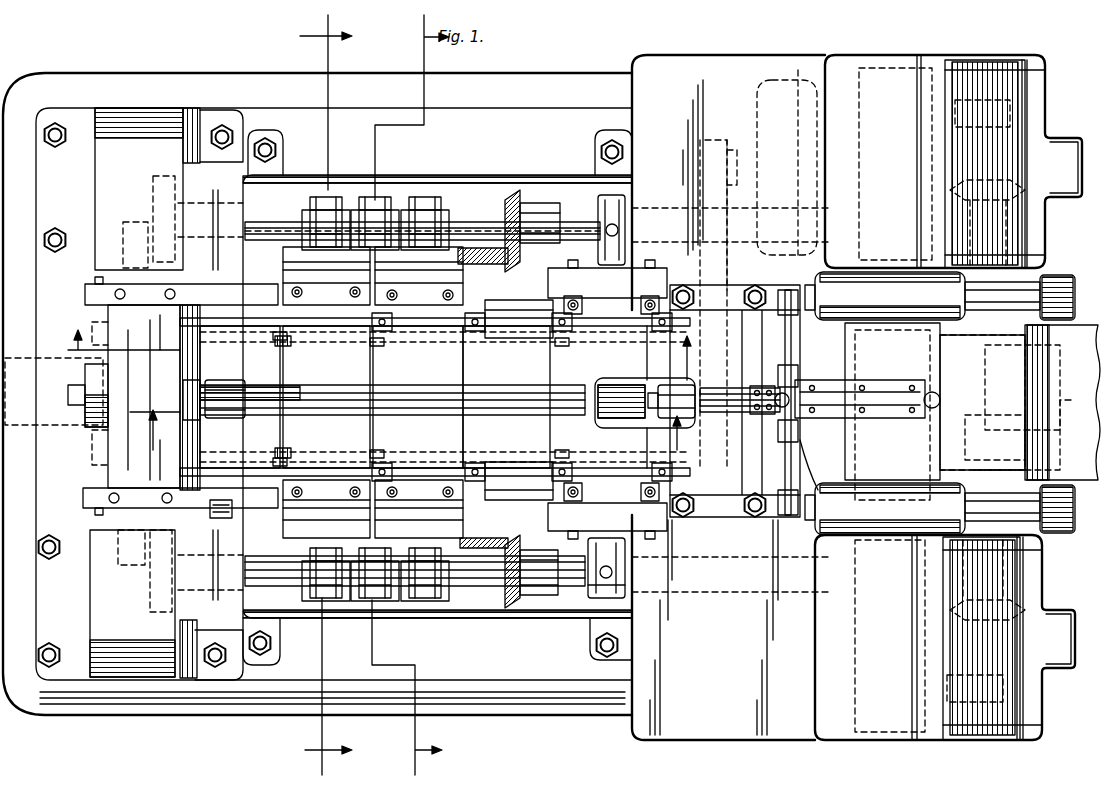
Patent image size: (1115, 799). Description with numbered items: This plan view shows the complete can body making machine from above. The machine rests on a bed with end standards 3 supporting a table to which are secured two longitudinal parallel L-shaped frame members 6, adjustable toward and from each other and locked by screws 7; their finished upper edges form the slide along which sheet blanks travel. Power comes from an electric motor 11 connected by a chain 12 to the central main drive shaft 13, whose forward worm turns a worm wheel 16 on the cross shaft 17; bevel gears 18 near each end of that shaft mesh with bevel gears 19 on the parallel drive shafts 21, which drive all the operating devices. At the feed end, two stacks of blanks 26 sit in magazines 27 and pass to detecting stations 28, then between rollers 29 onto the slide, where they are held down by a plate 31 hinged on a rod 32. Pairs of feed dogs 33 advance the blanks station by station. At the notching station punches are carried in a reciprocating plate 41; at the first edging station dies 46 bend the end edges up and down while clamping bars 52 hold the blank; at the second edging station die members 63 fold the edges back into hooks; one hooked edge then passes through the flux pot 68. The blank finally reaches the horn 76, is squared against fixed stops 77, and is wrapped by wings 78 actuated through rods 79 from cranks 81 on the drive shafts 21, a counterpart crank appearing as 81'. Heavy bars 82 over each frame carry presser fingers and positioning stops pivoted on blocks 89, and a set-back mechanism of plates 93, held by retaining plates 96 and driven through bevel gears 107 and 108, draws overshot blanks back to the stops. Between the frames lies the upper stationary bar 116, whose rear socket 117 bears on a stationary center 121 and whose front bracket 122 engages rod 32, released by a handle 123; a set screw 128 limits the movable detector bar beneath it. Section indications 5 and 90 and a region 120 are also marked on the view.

The end standard 3 is at (410, 395).
The section line 5- 5 is at (322, 395).
The L-shaped frame member 6 is at (492, 176).
The screw 7 is at (376, 355).
The electric motor 11 is at (165, 462).
The chain 12 is at (722, 270).
The main drive shaft 13 is at (858, 512).
The worm wheel 16 is at (1060, 460).
The cross shaft 17 is at (1010, 352).
The bevel gear 18 is at (1018, 195).
The bevel gear 19 is at (960, 237).
The drive shaft 21 is at (660, 208).
The stack of blanks 26 is at (1048, 652).
The magazine 27 is at (1066, 150).
The detecting station 28 is at (876, 68).
The roller 29 is at (940, 403).
The plate 31 is at (892, 411).
The rod 32 is at (792, 356).
The feed dog 33 is at (183, 475).
The reciprocating plate 41 is at (607, 399).
The die 46 is at (415, 280).
The clamping bar 52 is at (300, 338).
The die member 63 is at (335, 280).
The flux pot 68 is at (235, 508).
The horn 76 is at (98, 388).
The fixed stop 77 is at (85, 301).
The wing 78 is at (92, 334).
The rod 79 is at (118, 548).
The crank 81 is at (139, 189).
The bracket block 81' is at (132, 603).
The bar 82 is at (490, 338).
The block 89 is at (478, 313).
The screw 90 is at (285, 340).
The plate 93 is at (625, 230).
The retaining plate 96 is at (468, 375).
The bevel gear 107 is at (480, 248).
The bevel gear 108 is at (522, 215).
The upper stationary bar 116 is at (508, 400).
The socket 117 is at (232, 395).
The cylinder casing 120 is at (610, 392).
The stationary center 121 is at (200, 392).
The bracket 122 is at (742, 396).
The handle 123 is at (798, 402).
The set screw 128 is at (645, 418).